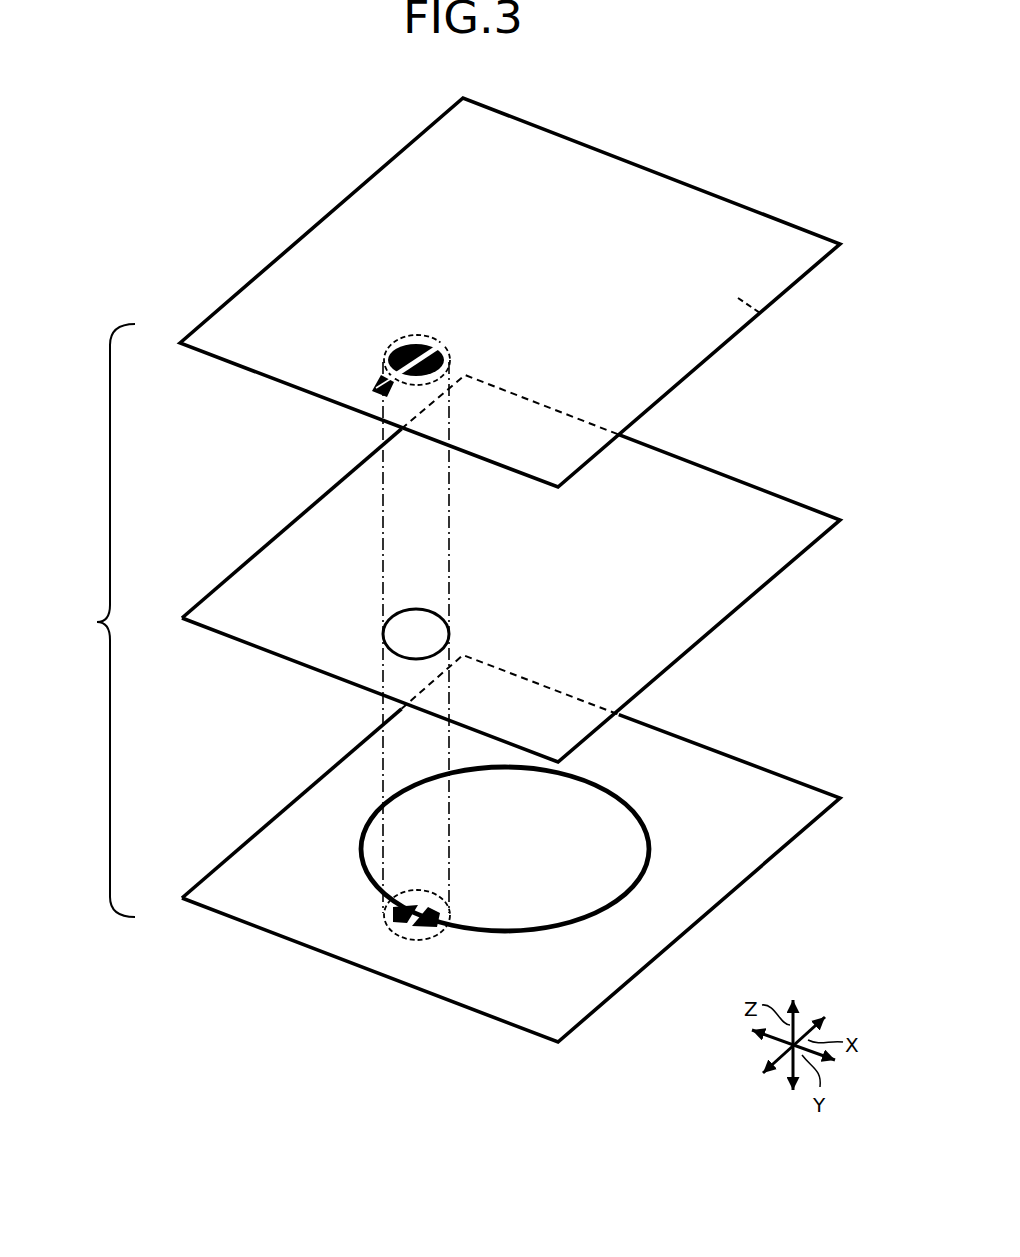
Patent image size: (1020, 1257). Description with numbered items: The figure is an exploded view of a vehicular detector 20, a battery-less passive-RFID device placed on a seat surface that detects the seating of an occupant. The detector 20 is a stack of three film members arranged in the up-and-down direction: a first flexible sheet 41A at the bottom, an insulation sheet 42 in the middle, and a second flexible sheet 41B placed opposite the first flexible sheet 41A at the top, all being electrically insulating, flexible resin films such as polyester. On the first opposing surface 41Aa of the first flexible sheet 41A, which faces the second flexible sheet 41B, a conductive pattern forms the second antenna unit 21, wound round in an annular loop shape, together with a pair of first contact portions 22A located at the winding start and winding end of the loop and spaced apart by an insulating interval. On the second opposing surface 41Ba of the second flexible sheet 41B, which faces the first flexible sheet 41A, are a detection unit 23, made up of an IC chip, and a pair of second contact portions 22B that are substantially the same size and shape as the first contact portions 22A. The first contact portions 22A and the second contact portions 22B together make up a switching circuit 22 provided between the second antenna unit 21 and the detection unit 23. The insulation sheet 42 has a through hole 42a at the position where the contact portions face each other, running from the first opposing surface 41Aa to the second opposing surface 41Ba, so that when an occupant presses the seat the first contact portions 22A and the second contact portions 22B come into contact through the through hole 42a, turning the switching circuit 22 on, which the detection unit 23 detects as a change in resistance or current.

The detector 20 is at (100, 620).
The second antenna unit 21 is at (528, 927).
The switching circuit 22 is at (416, 637).
The first contact portions 22A is at (420, 927).
The second contact portions 22B is at (447, 358).
The detection unit 23 is at (377, 385).
The first flexible sheet 41A is at (695, 740).
The first opposing surface 41Aa is at (752, 783).
The second flexible sheet 41B is at (695, 182).
The second opposing surface 41Ba is at (762, 315).
The insulation sheet 42 is at (695, 457).
The through hole 42a is at (400, 658).